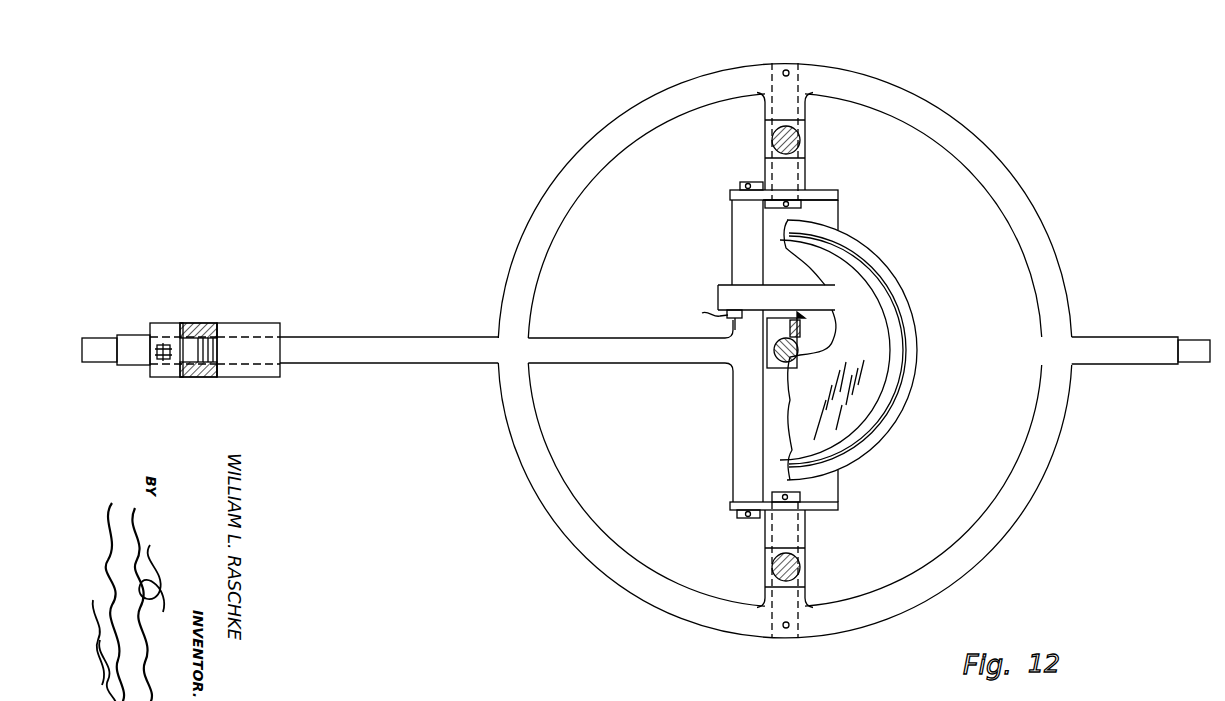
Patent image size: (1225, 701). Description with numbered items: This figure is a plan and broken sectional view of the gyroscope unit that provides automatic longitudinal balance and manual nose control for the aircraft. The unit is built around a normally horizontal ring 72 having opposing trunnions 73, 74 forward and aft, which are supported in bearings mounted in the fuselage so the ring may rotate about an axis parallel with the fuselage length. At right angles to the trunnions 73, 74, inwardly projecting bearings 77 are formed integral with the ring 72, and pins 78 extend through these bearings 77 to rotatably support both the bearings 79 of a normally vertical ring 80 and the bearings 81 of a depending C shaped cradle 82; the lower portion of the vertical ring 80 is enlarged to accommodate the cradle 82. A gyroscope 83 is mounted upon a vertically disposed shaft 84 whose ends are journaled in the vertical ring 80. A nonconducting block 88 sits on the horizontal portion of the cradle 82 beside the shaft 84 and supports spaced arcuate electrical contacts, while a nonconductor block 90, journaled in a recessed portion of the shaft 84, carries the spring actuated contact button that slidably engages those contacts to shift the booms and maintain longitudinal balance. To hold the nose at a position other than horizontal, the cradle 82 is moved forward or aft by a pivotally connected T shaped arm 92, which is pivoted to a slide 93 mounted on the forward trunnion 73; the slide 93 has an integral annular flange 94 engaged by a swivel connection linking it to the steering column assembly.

The horizontal ring 72 is at (601, 146).
The forward trunnion 73 is at (130, 345).
The aft trunnion 74 is at (1137, 346).
The inwardly projecting bearings 77 is at (807, 112).
The pins 78 is at (794, 62).
The vertical ring bearings 79 is at (806, 150).
The vertical ring 80 is at (765, 138).
The cradle bearings 81 is at (807, 182).
The C shaped cradle 82 is at (828, 216).
The gyroscope 83 is at (905, 323).
The vertical shaft 84 is at (777, 357).
The nonconducting block 88 is at (722, 298).
The nonconductor block 90 is at (799, 329).
The T shaped arm 92 is at (743, 215).
The slide 93 is at (255, 323).
The annular flange 94 is at (165, 323).